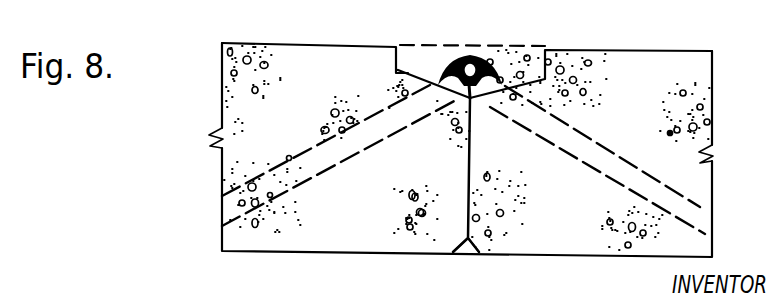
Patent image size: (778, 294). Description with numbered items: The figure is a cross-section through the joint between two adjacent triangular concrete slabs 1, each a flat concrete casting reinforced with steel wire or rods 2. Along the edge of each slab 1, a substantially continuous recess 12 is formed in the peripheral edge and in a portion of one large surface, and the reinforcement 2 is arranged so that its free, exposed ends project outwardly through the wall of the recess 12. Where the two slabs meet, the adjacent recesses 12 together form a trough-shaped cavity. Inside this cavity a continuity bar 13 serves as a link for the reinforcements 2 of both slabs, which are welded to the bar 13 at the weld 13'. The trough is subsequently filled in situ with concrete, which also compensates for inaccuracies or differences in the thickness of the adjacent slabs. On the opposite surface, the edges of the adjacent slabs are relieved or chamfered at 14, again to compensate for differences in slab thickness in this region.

The concrete slab 1 is at (350, 238).
The steel reinforcement 2 is at (227, 208).
The recess 12 is at (397, 50).
The continuity bar 13 is at (428, 74).
The weld 13' is at (479, 40).
The chamfer 14 is at (473, 255).